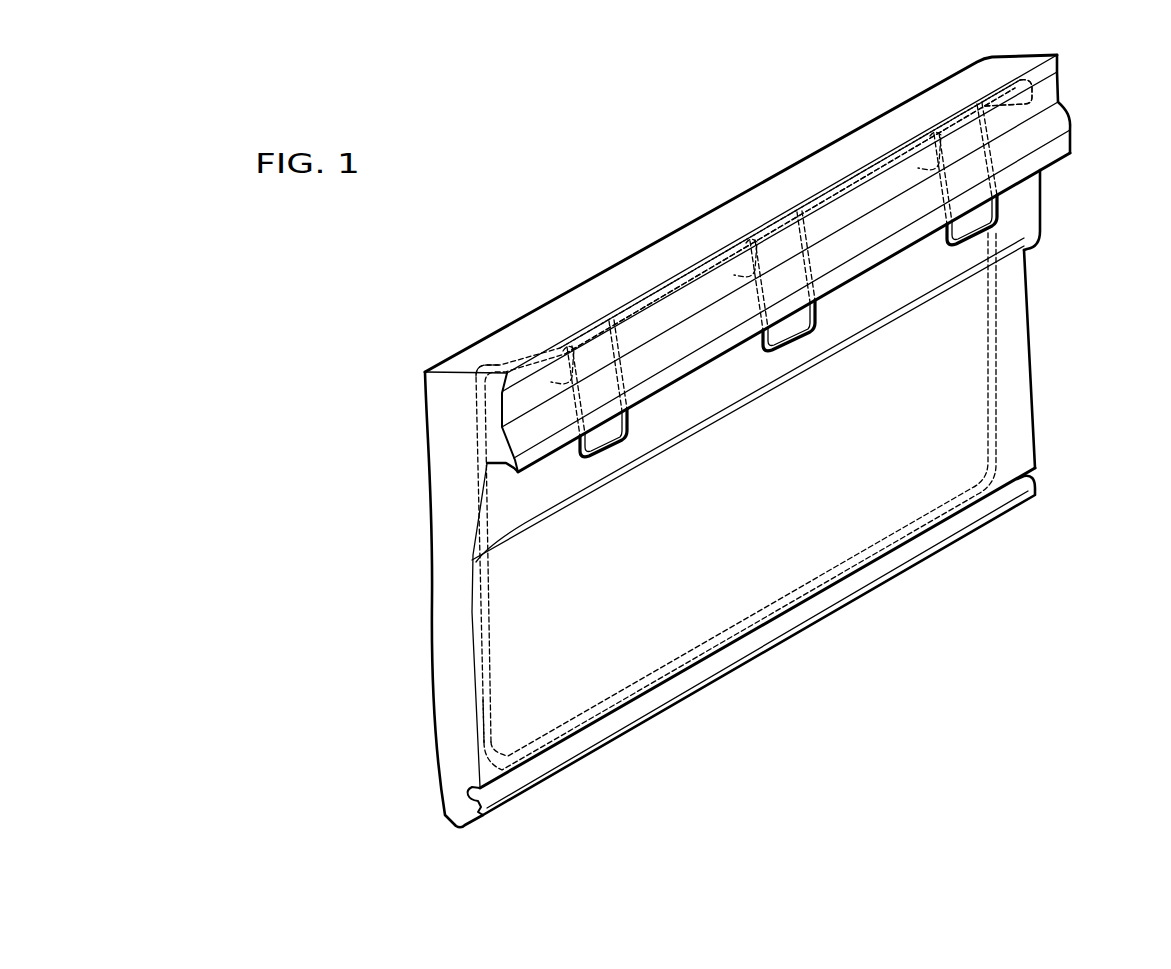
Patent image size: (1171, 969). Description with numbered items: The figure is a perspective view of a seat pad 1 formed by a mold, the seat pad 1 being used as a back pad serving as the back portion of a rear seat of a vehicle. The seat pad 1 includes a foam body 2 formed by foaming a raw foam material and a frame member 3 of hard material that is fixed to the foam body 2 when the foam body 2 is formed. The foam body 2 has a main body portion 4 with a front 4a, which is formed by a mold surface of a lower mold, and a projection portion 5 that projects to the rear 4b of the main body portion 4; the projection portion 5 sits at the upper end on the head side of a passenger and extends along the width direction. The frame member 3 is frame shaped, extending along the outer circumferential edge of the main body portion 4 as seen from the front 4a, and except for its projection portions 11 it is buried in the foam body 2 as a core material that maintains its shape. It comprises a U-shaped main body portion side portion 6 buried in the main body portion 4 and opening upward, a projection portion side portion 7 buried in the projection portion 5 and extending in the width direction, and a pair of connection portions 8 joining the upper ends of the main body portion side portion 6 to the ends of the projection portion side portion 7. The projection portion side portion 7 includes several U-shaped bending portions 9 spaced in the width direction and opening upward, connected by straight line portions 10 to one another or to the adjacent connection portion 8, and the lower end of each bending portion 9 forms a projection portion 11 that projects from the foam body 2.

The seat pad 1 is at (524, 154).
The foam body 2 is at (1039, 452).
The frame member 3 is at (994, 347).
The main body portion 4 is at (1027, 292).
The front 4a is at (432, 606).
The rear 4b is at (1017, 398).
The projection portion 5 is at (1063, 105).
The main body portion side portion 6 is at (478, 722).
The projection portion side portion 7 is at (825, 195).
The connection portion 8 is at (497, 372).
The bending portion 9 is at (923, 173).
The straight line portion 10 is at (852, 175).
The projection portion 11 is at (997, 203).